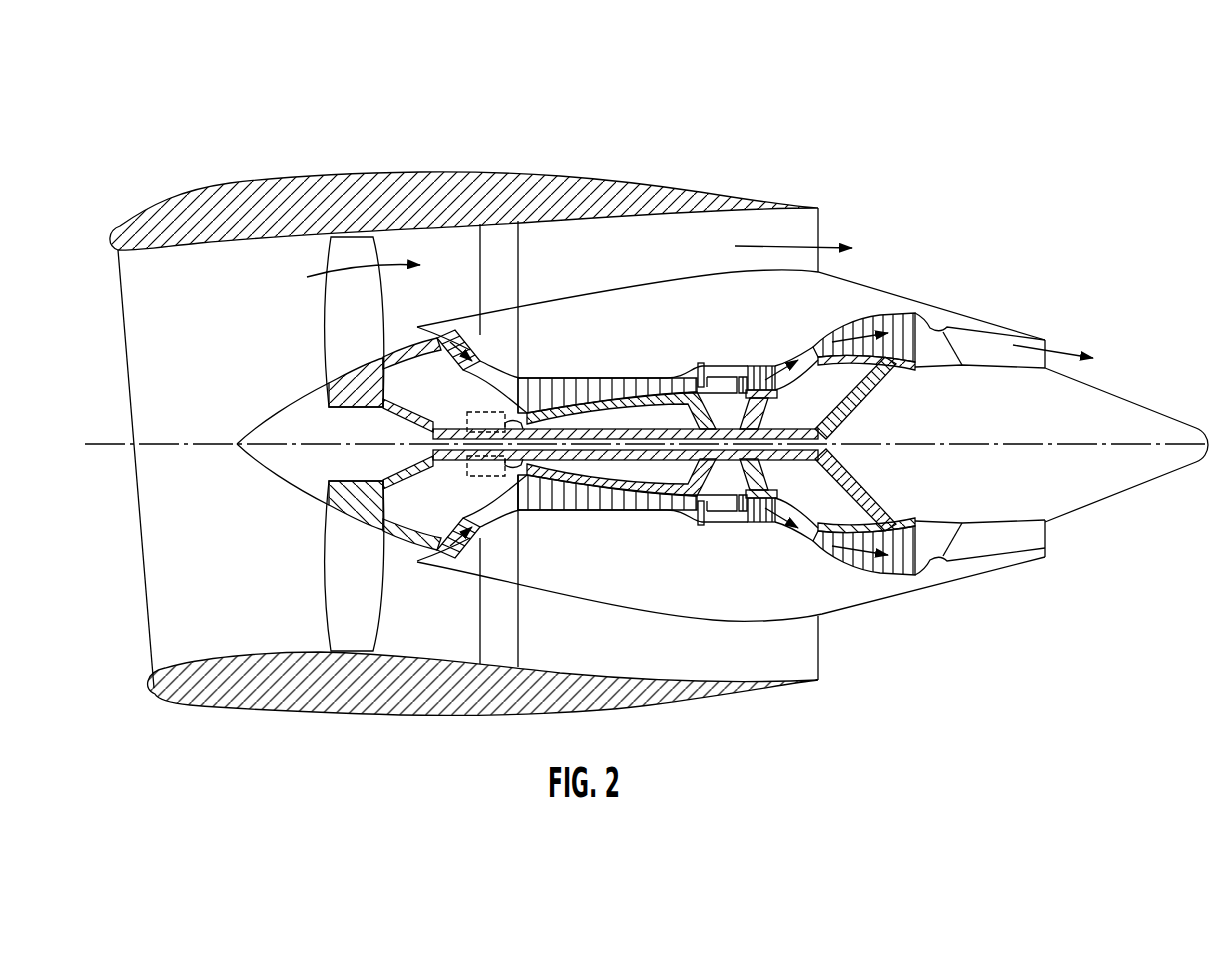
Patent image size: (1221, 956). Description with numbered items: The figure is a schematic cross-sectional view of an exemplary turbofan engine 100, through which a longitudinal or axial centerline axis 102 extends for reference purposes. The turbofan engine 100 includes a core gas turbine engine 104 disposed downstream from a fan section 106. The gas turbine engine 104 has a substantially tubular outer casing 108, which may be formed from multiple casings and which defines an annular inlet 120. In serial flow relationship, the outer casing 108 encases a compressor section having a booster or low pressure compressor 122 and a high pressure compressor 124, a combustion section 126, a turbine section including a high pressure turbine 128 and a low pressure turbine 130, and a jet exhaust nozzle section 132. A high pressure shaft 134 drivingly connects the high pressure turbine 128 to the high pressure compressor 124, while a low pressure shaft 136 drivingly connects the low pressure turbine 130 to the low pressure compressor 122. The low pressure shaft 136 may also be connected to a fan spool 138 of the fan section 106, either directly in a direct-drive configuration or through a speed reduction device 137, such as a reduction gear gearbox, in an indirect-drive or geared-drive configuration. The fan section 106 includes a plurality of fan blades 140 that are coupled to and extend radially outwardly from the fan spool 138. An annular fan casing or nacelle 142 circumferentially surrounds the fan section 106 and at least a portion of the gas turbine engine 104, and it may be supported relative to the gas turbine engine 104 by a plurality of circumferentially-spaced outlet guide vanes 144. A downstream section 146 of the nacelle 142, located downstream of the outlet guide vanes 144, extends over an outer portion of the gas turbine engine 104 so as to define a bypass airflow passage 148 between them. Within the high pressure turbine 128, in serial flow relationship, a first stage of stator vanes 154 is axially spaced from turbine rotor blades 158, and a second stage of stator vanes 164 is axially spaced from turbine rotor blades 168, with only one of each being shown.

The turbofan engine 100 is at (622, 122).
The longitudinal centerline axis 102 is at (983, 443).
The gas turbine engine 104 is at (678, 340).
The fan section 106 is at (468, 444).
The outer casing 108 is at (677, 610).
The annular inlet 120 is at (412, 552).
The low pressure compressor 122 is at (480, 523).
The high pressure compressor 124 is at (545, 503).
The combustion section 126 is at (714, 517).
The high pressure turbine 128 is at (781, 462).
The low pressure turbine 130 is at (900, 590).
The jet exhaust nozzle section 132 is at (1048, 341).
The high pressure shaft 134 is at (722, 413).
The low pressure shaft 136 is at (470, 427).
The speed reduction device 137 is at (496, 428).
The fan spool 138 is at (353, 441).
The fan blades 140 is at (327, 595).
The nacelle 142 is at (377, 718).
The outlet guide vanes 144 is at (518, 255).
The downstream section 146 is at (745, 195).
The bypass airflow passage 148 is at (652, 259).
The first stage of stator vanes 154 is at (684, 479).
The turbine rotor blades 158 is at (735, 518).
The second stage of stator vanes 164 is at (757, 520).
The turbine rotor blades 168 is at (797, 522).